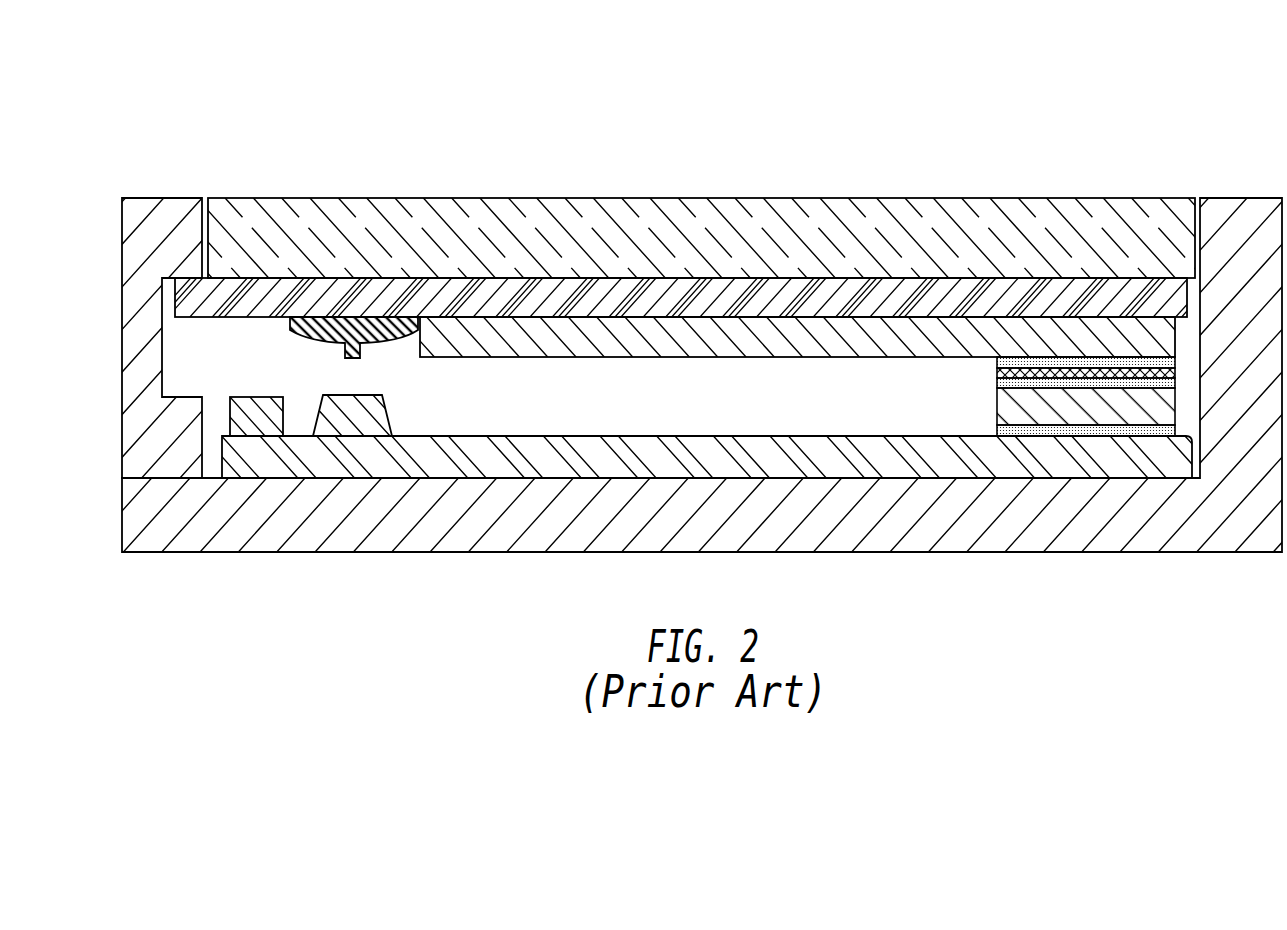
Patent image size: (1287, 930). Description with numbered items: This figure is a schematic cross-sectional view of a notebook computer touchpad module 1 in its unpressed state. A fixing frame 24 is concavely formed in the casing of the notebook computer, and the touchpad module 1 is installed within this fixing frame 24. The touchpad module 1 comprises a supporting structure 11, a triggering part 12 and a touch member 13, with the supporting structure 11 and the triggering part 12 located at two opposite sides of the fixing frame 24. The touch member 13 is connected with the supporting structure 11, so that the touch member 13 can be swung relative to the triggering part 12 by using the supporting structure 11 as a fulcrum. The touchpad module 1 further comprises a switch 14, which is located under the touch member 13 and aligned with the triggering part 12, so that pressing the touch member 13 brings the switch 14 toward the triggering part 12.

The touchpad module 1 is at (1167, 108).
The supporting structure 11 is at (1085, 410).
The triggering part 12 is at (370, 412).
The touch member 13 is at (1018, 294).
The switch 14 is at (345, 325).
The fixing frame 24 is at (163, 216).